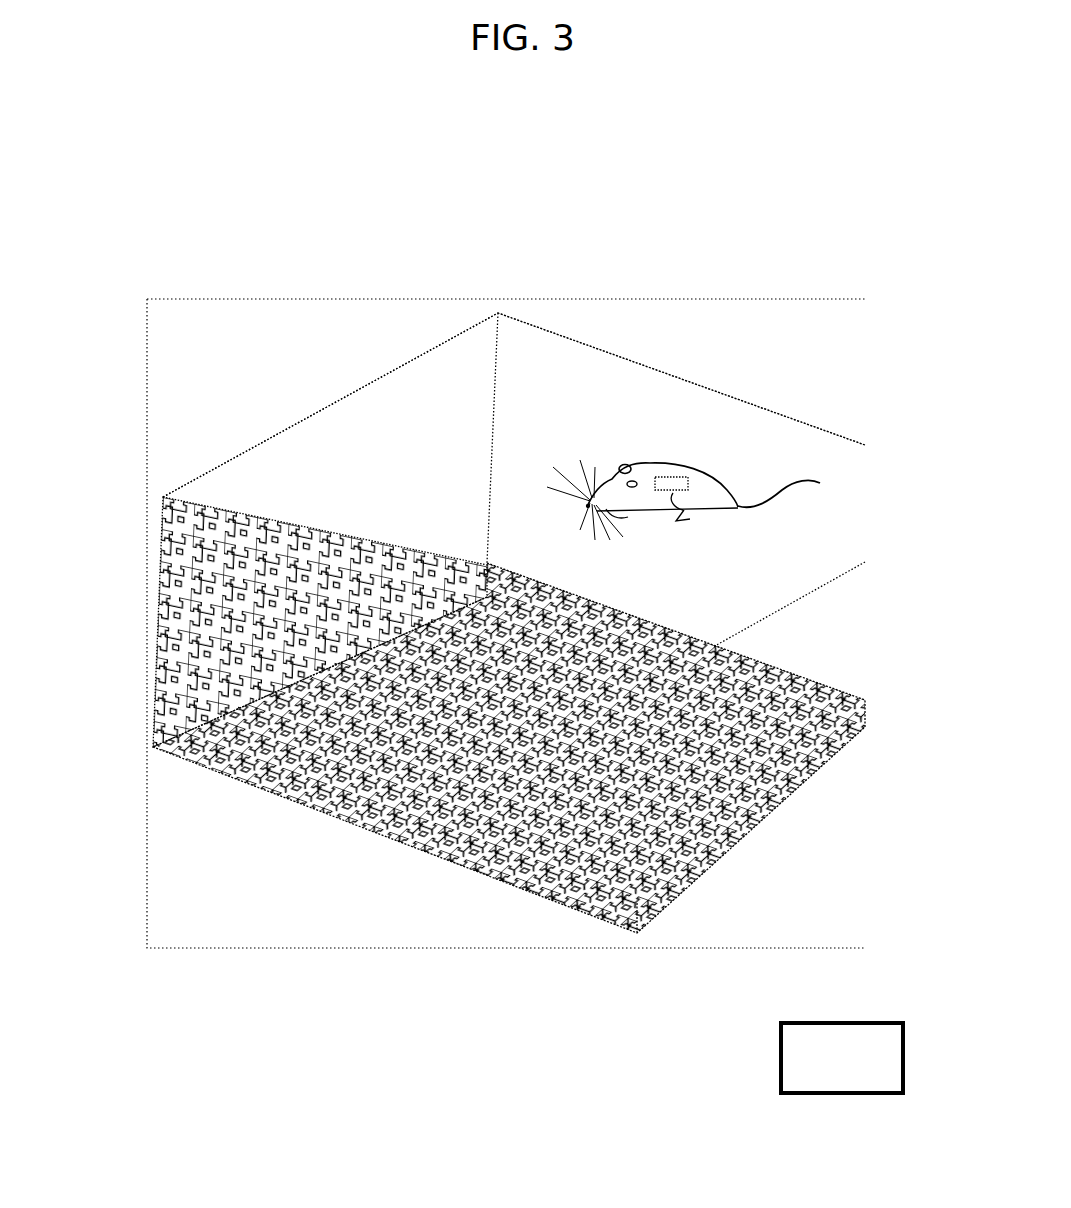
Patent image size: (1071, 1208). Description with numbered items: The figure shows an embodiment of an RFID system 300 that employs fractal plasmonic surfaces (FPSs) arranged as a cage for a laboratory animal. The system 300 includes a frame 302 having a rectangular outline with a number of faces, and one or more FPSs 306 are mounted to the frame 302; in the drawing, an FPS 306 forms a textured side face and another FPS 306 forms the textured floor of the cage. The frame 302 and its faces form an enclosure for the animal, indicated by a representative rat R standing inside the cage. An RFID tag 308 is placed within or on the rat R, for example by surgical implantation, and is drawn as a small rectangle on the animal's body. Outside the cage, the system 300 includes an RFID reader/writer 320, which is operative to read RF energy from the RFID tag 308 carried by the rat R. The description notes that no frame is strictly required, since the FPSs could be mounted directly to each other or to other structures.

The RFID system 300 is at (188, 185).
The frame 302 is at (458, 338).
The FPS 306 is at (777, 785).
The RFID tag 308 is at (673, 475).
The rat R is at (727, 480).
The RFID reader/writer 320 is at (782, 977).